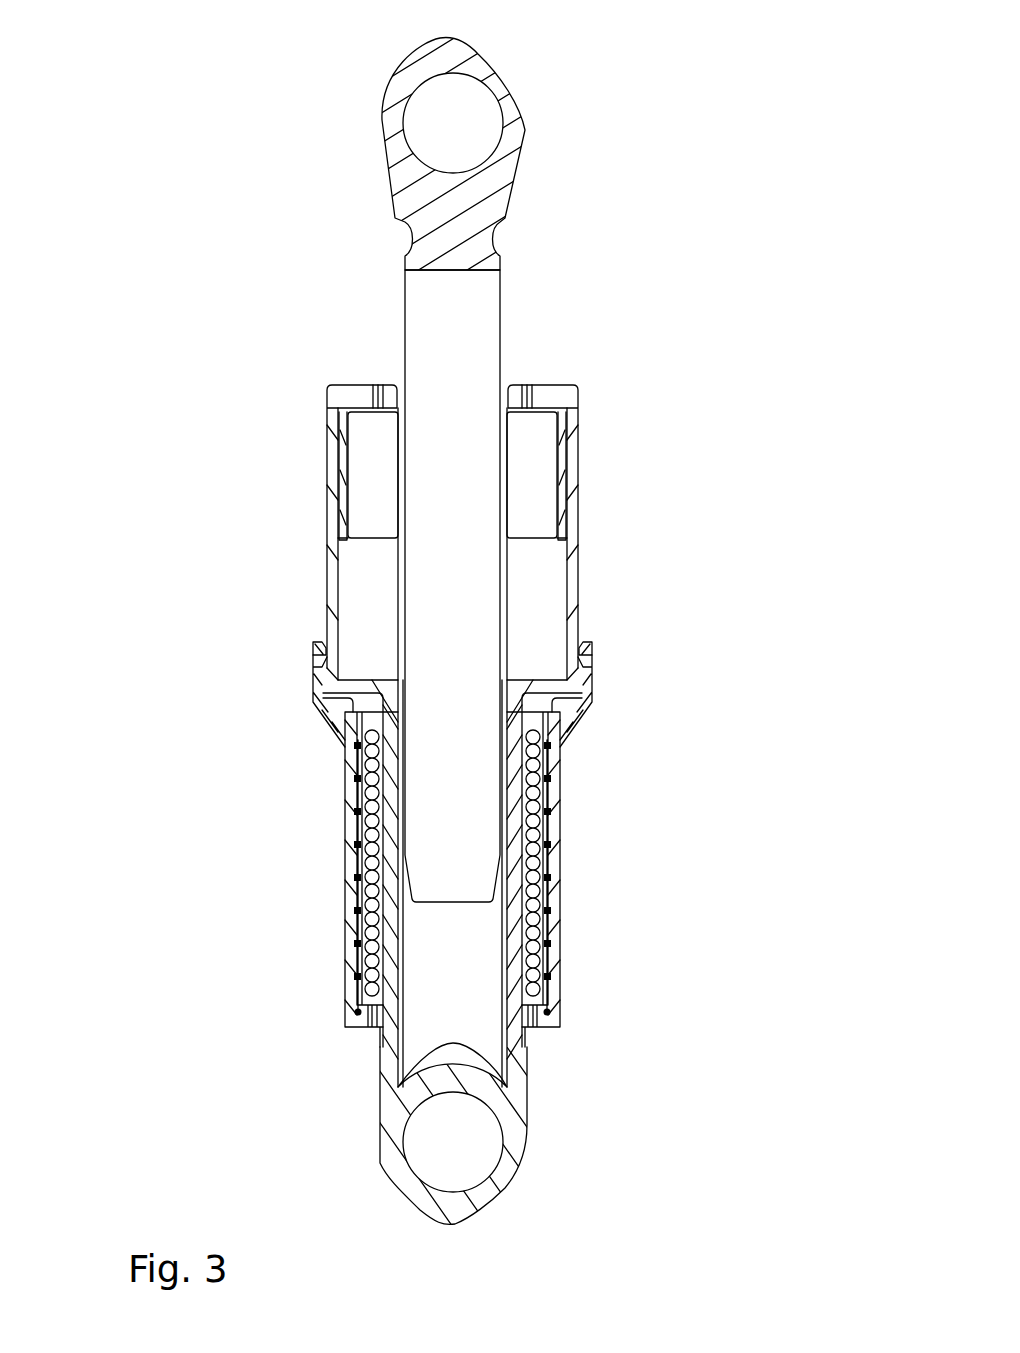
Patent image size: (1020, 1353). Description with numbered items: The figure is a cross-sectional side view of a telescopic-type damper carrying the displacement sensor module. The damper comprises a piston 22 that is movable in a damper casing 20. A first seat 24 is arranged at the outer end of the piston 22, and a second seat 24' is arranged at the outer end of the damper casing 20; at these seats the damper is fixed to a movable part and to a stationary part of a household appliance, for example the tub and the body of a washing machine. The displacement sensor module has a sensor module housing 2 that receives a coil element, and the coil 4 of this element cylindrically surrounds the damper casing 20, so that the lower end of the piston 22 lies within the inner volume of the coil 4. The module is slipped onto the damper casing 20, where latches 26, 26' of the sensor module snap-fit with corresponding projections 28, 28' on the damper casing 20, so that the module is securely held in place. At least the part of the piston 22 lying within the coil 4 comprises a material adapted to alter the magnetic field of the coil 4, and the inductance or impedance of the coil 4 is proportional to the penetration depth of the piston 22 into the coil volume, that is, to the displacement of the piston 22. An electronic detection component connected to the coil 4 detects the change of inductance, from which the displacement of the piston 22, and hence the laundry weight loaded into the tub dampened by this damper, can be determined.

The sensor module housing 2 is at (355, 938).
The coil 4 is at (530, 957).
The damper casing 20 is at (515, 1062).
The piston 22 is at (475, 655).
The first seat 24 is at (508, 180).
The second seat 24' is at (464, 1140).
The latch 26 is at (639, 701).
The latch 26' is at (267, 701).
The projection 28 is at (633, 631).
The projection 28' is at (267, 624).